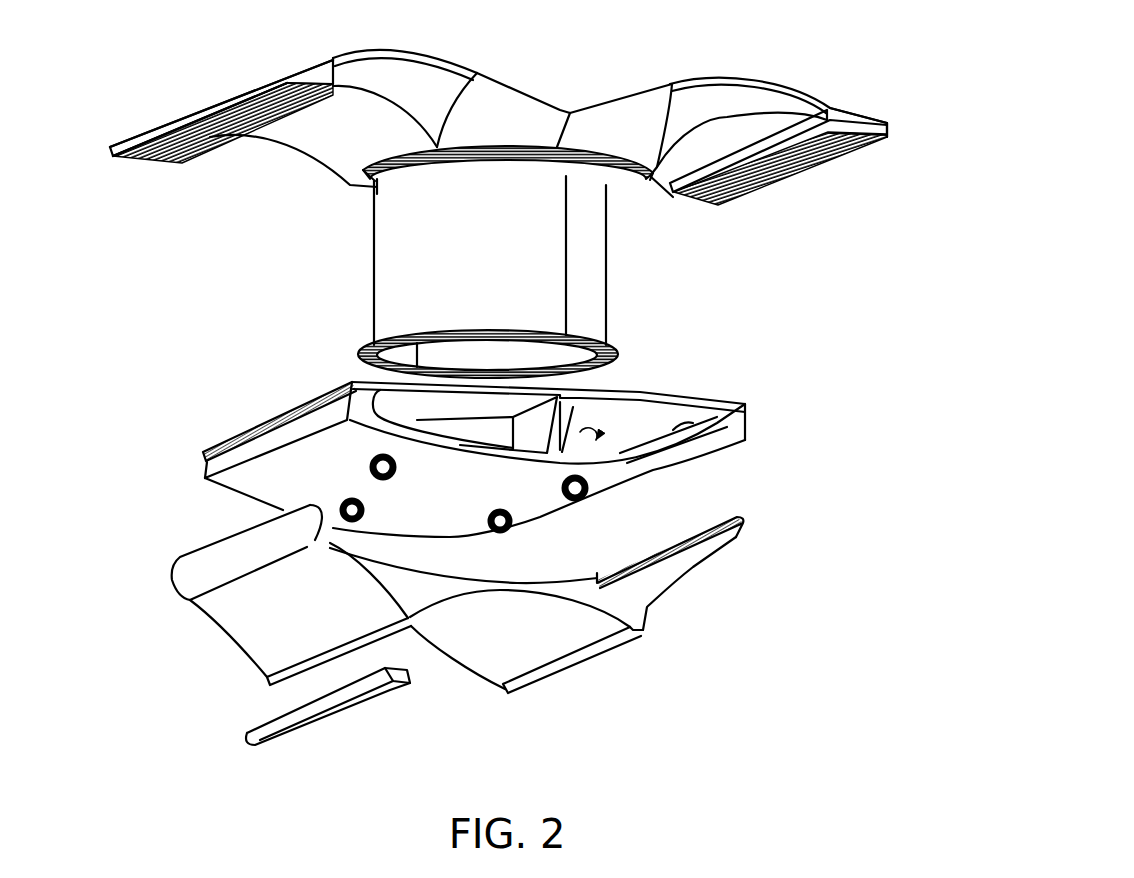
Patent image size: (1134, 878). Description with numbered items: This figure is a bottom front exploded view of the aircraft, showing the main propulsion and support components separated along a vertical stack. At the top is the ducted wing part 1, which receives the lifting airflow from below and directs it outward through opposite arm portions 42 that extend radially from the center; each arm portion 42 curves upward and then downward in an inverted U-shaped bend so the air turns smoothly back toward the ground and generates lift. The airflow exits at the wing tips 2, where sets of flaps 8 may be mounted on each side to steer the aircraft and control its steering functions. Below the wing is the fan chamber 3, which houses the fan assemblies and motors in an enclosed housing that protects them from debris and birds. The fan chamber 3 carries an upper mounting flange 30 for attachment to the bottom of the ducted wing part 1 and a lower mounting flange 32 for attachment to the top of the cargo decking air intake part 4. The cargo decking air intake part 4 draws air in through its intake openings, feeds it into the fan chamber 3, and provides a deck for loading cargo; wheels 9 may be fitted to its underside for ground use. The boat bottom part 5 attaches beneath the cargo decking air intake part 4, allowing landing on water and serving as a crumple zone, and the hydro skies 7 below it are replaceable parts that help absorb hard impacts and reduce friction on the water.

The ducted wing part 1 is at (487, 127).
The wing tips 2 is at (890, 137).
The fan chamber 3 is at (540, 288).
The cargo decking air intake part 4 is at (645, 474).
The boat bottom part 5 is at (624, 608).
The hydro skies 7 is at (315, 722).
The flaps 8 is at (277, 120).
The wheels 9 is at (362, 466).
The upper mounting flange 30 is at (640, 182).
The lower mounting flange 32 is at (617, 354).
The arm portions 42 is at (293, 73).